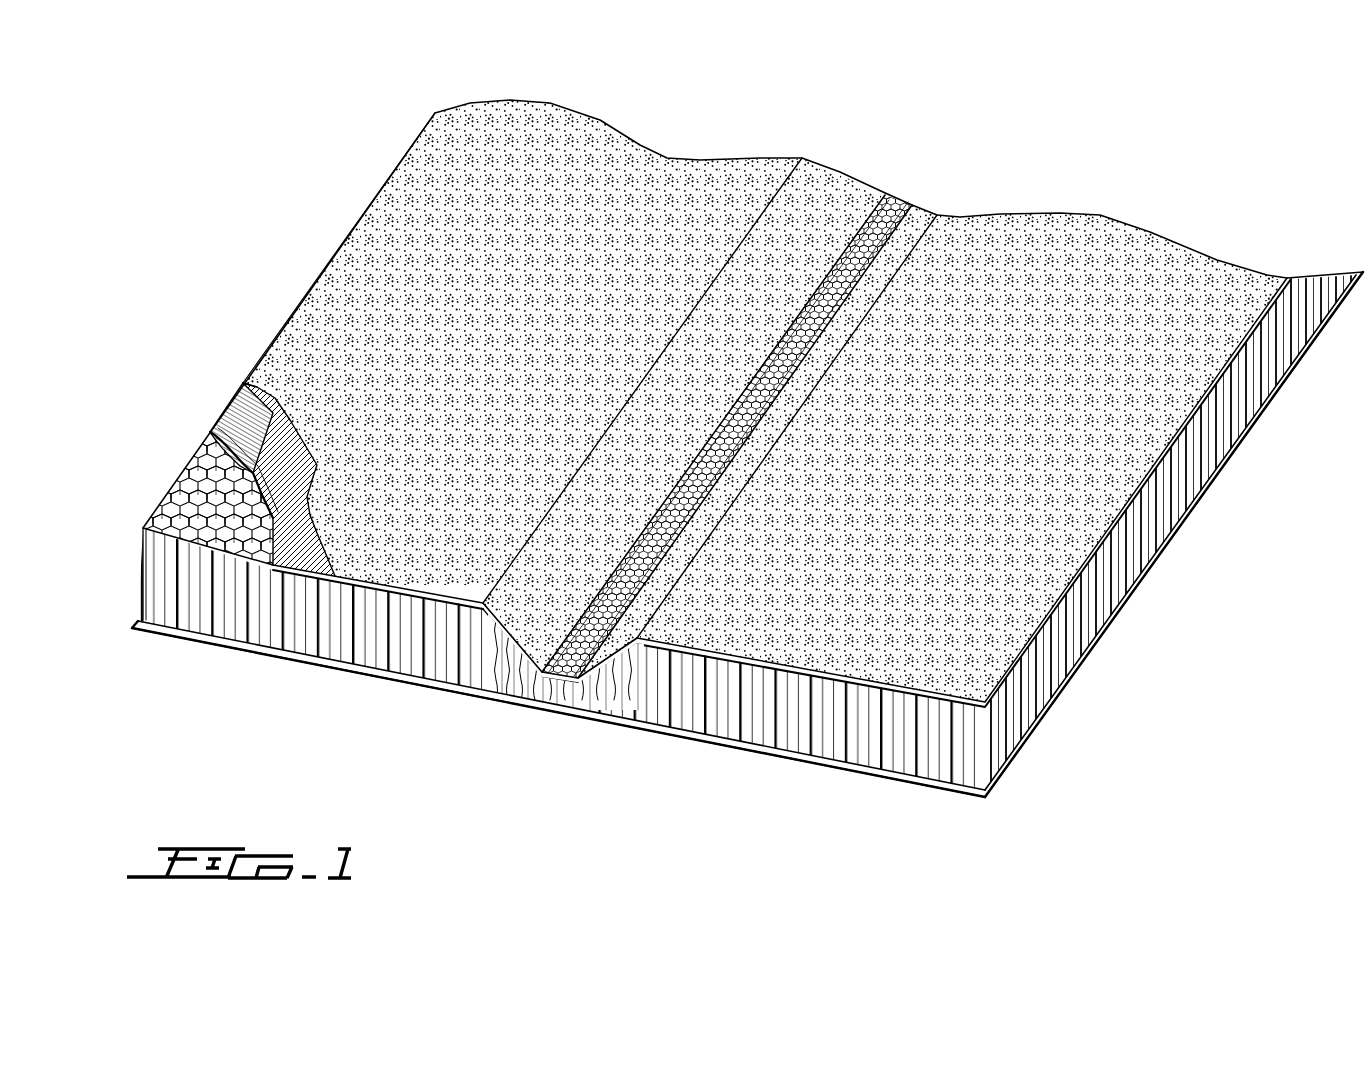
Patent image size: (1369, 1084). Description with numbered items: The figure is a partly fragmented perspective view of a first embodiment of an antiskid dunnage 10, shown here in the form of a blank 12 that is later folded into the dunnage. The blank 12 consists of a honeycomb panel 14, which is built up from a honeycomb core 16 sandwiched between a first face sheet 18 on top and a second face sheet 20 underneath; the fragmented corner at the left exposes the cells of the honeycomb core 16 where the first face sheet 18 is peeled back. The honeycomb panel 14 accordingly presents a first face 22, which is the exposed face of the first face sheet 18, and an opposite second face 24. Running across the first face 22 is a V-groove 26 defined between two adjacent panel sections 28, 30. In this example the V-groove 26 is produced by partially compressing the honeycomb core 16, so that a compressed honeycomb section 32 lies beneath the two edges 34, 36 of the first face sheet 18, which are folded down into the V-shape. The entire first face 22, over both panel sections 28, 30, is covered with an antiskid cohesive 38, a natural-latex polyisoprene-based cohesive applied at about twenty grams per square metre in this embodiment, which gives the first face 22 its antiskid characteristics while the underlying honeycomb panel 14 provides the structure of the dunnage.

The antiskid dunnage 10 is at (1272, 665).
The blank 12 is at (1316, 278).
The honeycomb panel 14 is at (1297, 363).
The honeycomb core 16 is at (142, 578).
The first face sheet 18 is at (243, 422).
The second face sheet 20 is at (208, 648).
The first face 22 is at (369, 433).
The second face 24 is at (325, 676).
The V-groove 26 is at (812, 219).
The panel section 28 is at (574, 226).
The panel section 30 is at (1074, 313).
The compressed honeycomb section 32 is at (525, 690).
The edge of the first face sheet 34 is at (674, 433).
The edge of the first face sheet 36 is at (760, 425).
The antiskid cohesive 38 is at (348, 300).